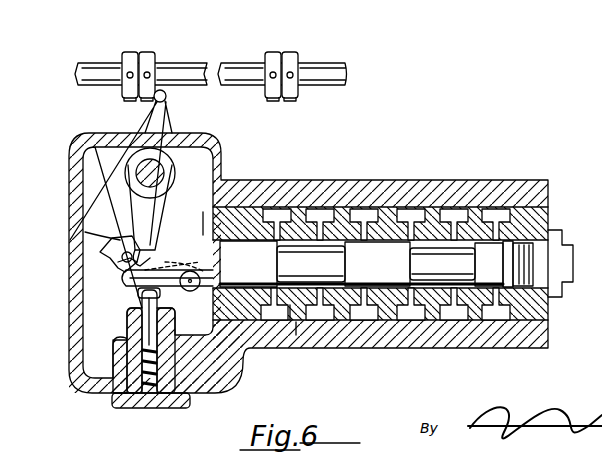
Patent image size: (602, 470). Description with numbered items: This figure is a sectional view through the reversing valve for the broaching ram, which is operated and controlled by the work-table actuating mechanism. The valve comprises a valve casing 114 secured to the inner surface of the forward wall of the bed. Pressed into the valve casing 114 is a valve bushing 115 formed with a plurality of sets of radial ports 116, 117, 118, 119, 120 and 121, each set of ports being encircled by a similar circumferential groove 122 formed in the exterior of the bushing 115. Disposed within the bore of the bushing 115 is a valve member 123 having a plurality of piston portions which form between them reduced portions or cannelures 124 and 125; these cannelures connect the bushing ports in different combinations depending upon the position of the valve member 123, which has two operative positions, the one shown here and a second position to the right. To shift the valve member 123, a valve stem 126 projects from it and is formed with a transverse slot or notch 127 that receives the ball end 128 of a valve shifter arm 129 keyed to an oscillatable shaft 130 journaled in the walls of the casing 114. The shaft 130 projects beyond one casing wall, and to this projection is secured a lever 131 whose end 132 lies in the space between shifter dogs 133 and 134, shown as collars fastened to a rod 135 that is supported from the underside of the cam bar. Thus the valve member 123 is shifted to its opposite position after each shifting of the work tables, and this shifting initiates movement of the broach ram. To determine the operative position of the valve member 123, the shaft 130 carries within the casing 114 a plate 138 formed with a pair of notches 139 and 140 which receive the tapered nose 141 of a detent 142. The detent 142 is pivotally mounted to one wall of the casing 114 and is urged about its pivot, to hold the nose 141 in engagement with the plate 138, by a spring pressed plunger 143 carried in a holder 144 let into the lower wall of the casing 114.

The valve casing 114 is at (526, 188).
The valve bushing 115 is at (552, 222).
The radial ports 116 is at (274, 323).
The radial ports 117 is at (322, 322).
The radial ports 118 is at (364, 322).
The radial ports 119 is at (411, 322).
The radial ports 120 is at (455, 322).
The radial ports 121 is at (497, 322).
The circumferential groove 122 is at (296, 340).
The valve member 123 is at (195, 220).
The cannelure 124 is at (298, 222).
The cannelure 125 is at (437, 225).
The valve stem 126 is at (135, 298).
The transverse slot 127 is at (145, 250).
The ball end 128 is at (118, 262).
The valve shifter arm 129 is at (176, 193).
The oscillatable shaft 130 is at (158, 174).
The lever 131 is at (168, 124).
The lever end 132 is at (168, 98).
The shifter dog 133 is at (152, 62).
The shifter dog 134 is at (268, 60).
The rod 135 is at (318, 68).
The plate 138 is at (75, 183).
The notch 139 is at (110, 247).
The notch 140 is at (105, 238).
The tapered nose 141 is at (118, 280).
The detent 142 is at (190, 293).
The spring pressed plunger 143 is at (148, 320).
The holder 144 is at (147, 410).